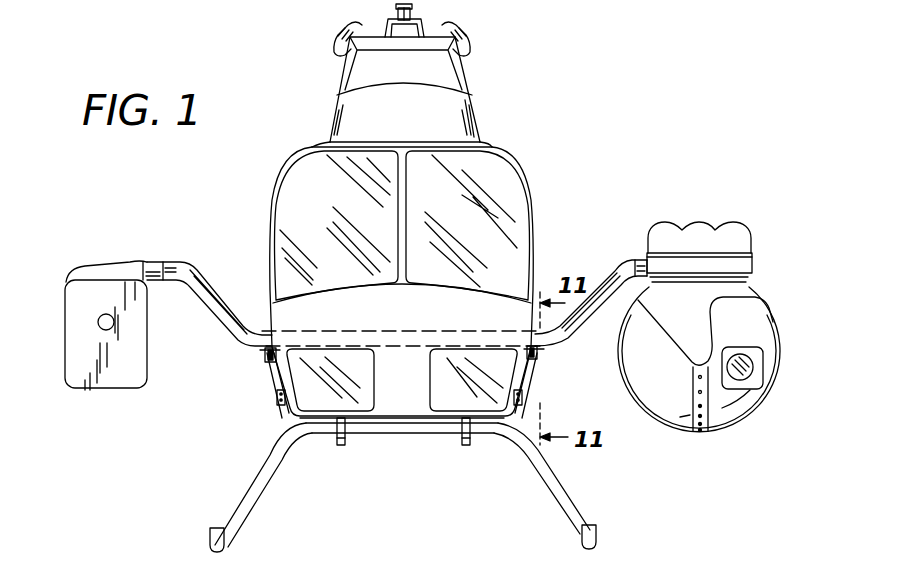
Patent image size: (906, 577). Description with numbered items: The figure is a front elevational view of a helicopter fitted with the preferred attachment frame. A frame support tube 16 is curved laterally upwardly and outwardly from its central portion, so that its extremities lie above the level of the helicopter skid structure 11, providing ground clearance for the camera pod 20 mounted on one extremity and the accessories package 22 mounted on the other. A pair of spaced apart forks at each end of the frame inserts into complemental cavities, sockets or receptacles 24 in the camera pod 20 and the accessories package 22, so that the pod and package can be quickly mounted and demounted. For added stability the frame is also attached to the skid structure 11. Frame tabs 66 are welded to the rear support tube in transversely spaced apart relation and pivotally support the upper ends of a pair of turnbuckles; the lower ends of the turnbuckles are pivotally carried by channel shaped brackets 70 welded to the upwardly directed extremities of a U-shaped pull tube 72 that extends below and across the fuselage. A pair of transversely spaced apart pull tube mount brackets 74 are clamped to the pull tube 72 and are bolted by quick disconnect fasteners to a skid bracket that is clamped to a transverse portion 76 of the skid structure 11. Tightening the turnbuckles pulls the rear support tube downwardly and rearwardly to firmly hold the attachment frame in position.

The skid structure 11 is at (413, 485).
The frame support tube 16 is at (238, 330).
The camera pod 20 is at (763, 308).
The accessories package 22 is at (67, 312).
The receptacle 24 is at (152, 262).
The frame tab 66 is at (265, 356).
The channel shaped bracket 70 is at (523, 402).
The pull tube 72 is at (425, 426).
The pull tube mount bracket 74 is at (341, 445).
The transverse portion 76 is at (373, 440).